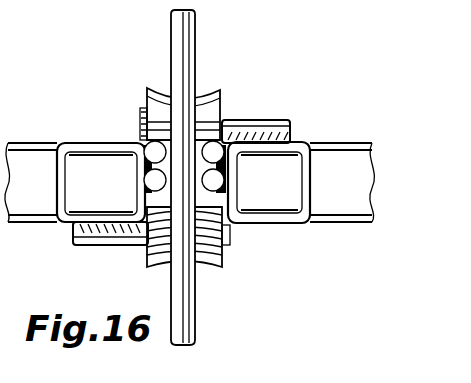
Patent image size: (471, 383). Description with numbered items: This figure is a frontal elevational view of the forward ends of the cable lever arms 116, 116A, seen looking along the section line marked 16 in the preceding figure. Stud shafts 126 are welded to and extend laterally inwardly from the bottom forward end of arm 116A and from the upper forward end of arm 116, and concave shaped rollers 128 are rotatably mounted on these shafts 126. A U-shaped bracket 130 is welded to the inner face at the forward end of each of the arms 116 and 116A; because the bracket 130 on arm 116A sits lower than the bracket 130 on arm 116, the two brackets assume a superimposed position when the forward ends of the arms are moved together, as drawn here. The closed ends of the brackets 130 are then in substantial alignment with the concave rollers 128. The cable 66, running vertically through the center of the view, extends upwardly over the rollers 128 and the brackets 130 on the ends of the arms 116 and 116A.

The cable 66 is at (196, 46).
The concave shaped roller 128 is at (222, 93).
The stud shaft 126 is at (278, 119).
The cable lever arm 116 is at (340, 142).
The cable lever arm 116A is at (100, 143).
The assembly 16 is at (0, 116).
The U-shaped bracket 130 is at (147, 179).